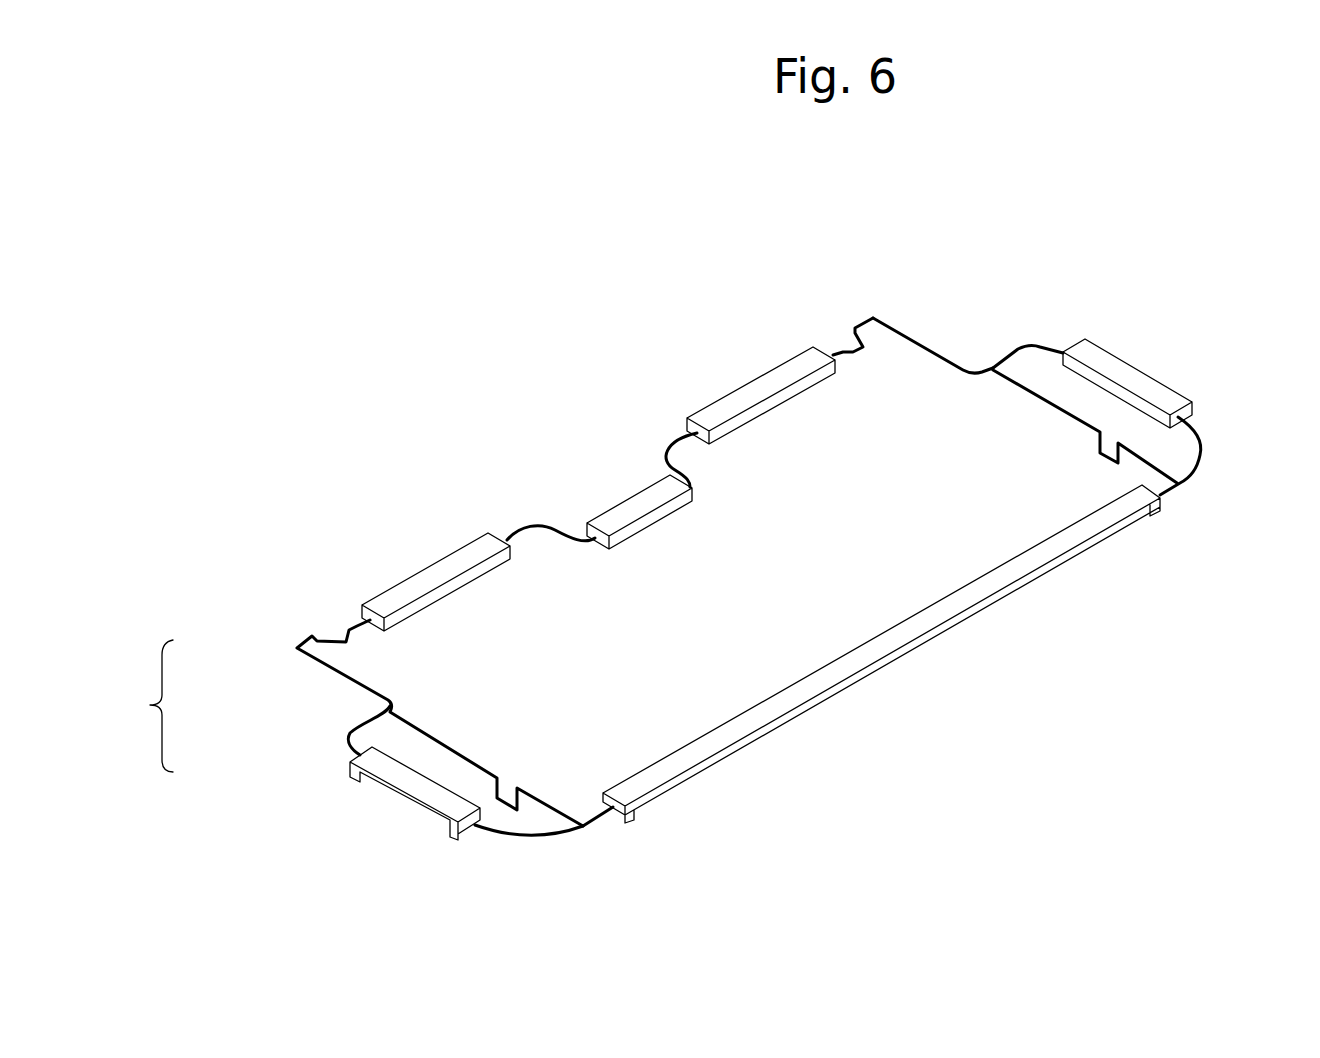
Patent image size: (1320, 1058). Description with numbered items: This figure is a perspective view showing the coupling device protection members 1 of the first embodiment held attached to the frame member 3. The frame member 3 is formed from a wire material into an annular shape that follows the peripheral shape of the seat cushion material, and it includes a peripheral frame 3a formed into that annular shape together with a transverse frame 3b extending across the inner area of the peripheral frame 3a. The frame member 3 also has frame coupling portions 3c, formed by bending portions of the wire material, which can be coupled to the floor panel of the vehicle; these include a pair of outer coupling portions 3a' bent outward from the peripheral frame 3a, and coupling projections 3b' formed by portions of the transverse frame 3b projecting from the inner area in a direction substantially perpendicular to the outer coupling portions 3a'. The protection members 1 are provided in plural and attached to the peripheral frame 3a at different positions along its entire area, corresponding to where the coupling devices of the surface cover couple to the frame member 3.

The protection member 1 is at (443, 573).
The frame member 3 is at (585, 457).
The peripheral frame 3a is at (1085, 527).
The transverse frame 3b is at (862, 626).
The outer coupling portion 3a' is at (545, 512).
The coupling projection 3b' is at (732, 533).
The frame coupling portion 3c is at (140, 706).